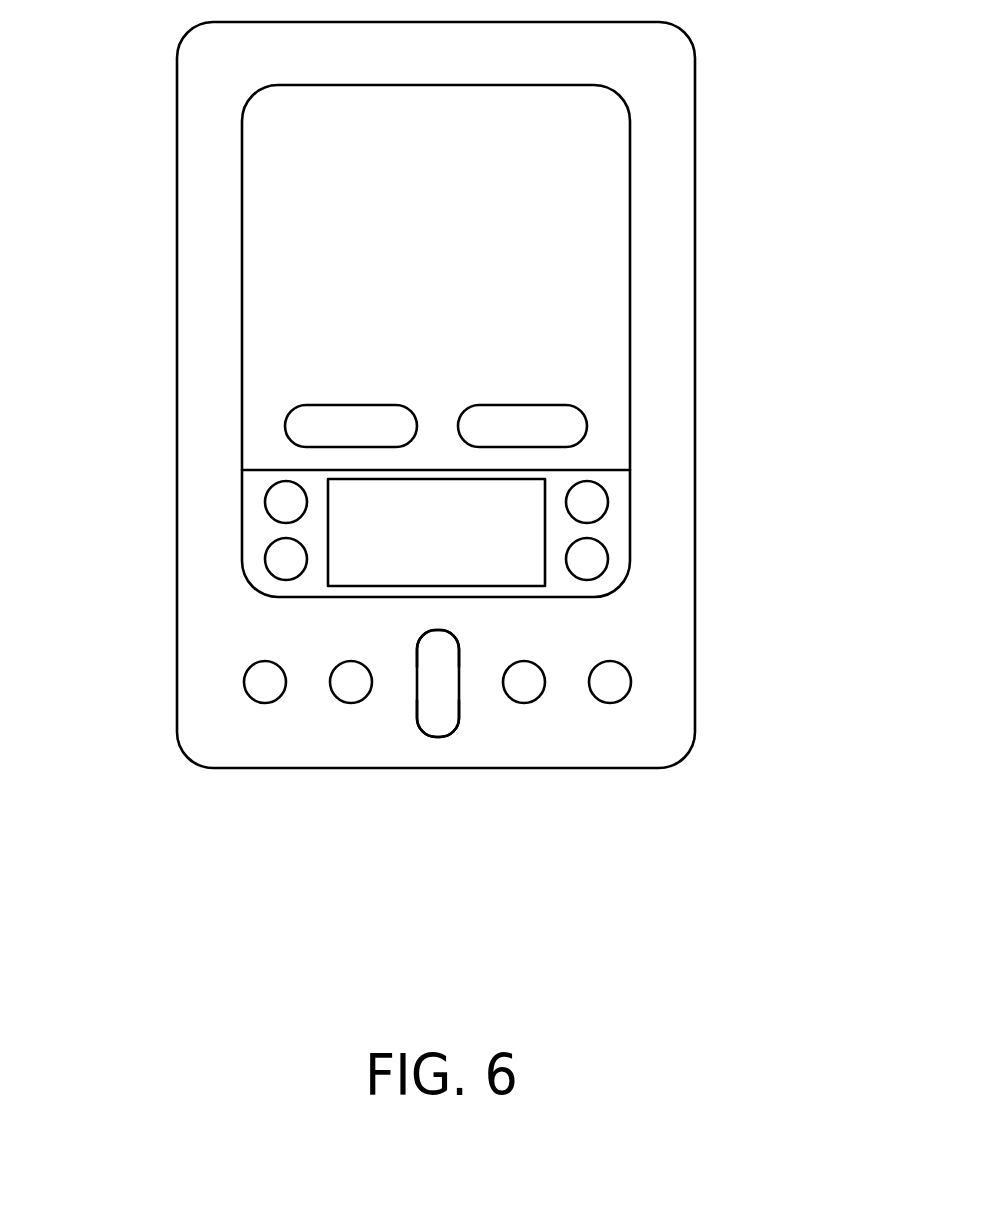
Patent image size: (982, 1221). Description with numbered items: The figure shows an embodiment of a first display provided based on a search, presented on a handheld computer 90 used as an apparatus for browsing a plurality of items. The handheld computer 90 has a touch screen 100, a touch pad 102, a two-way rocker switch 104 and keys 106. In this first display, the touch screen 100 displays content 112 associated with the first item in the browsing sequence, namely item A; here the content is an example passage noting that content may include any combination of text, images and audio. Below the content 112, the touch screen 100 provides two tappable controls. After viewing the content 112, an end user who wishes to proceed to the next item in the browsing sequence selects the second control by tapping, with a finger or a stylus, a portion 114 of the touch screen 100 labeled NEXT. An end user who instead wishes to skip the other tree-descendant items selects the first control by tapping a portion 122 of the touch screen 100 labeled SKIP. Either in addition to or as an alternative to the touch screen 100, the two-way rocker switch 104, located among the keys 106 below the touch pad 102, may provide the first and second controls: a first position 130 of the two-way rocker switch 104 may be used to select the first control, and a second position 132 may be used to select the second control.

The handheld computer 90 is at (177, 235).
The touch screen 100 is at (630, 169).
The content 112 is at (542, 235).
The portion of the touch screen 114 is at (285, 426).
The portion of the touch screen 122 is at (587, 426).
The touch pad 102 is at (630, 512).
The keys 106 is at (244, 682).
The two-way rocker switch 104 is at (417, 686).
The first position 130 is at (459, 725).
The second position 132 is at (459, 640).